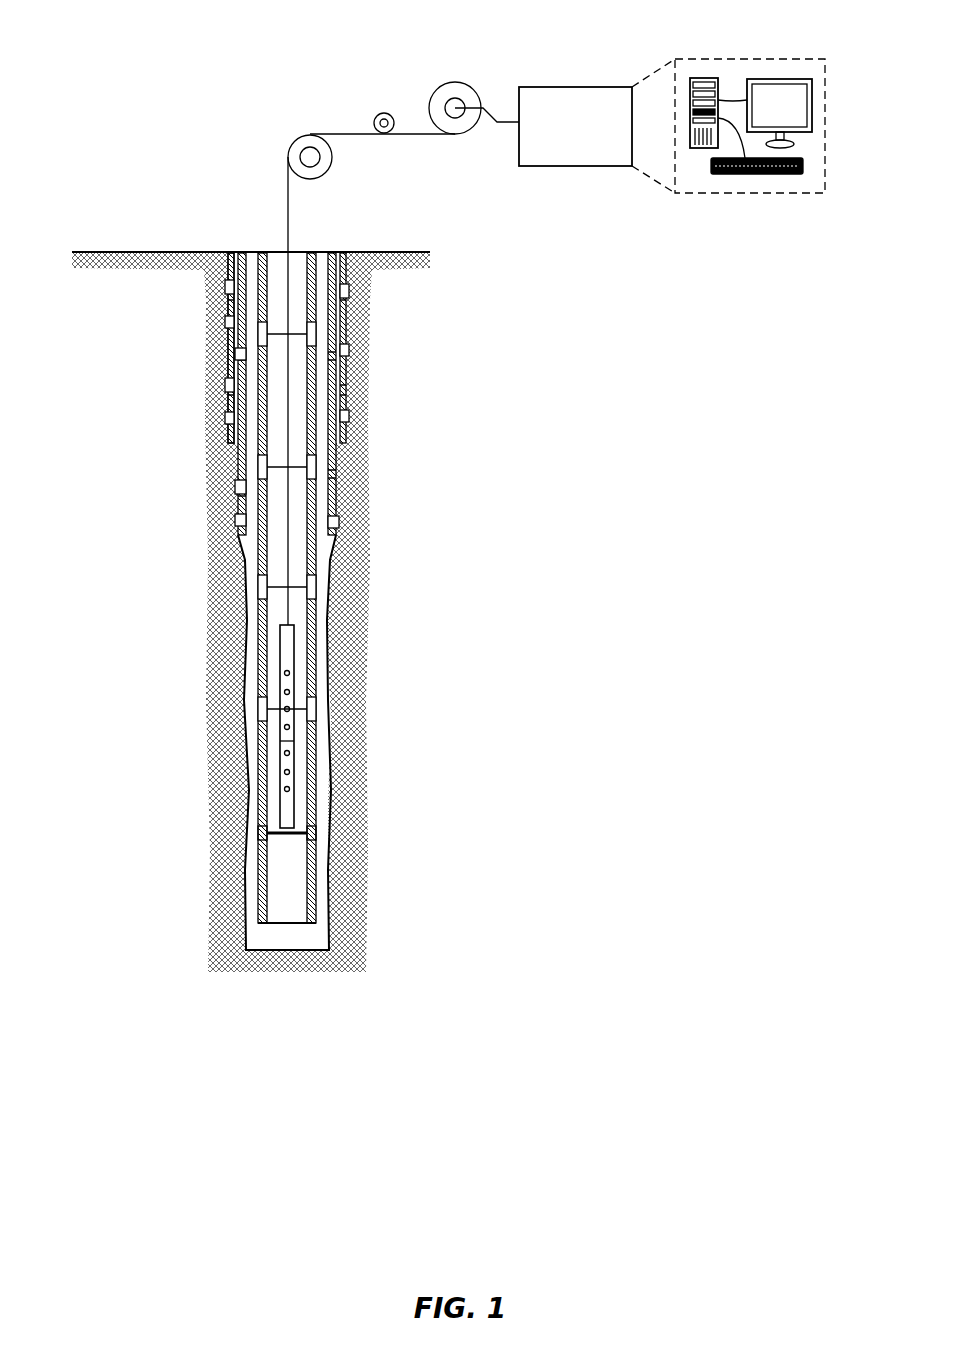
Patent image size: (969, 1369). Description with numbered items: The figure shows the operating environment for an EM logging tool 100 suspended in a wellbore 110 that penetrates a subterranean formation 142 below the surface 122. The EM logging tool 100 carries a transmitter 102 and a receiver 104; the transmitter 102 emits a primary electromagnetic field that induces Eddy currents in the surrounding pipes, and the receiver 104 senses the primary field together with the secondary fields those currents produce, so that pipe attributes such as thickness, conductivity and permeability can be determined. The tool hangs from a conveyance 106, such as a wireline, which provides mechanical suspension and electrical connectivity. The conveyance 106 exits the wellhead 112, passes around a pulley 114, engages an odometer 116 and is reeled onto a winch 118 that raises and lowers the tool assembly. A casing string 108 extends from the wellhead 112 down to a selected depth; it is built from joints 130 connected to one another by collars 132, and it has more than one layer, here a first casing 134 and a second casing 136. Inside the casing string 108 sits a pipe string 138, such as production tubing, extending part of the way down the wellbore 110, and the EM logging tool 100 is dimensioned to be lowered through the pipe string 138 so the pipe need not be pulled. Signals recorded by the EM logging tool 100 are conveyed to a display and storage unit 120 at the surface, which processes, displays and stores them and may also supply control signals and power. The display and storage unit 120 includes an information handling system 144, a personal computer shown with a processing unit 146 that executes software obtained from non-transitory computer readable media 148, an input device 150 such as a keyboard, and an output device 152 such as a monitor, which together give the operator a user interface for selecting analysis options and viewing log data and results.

The EM logging tool 100 is at (284, 726).
The transmitter 102 is at (292, 673).
The receiver 104 is at (292, 692).
The conveyance 106 is at (289, 220).
The casing string 108 is at (222, 448).
The wellbore 110 is at (330, 540).
The wellhead 112 is at (277, 250).
The pulley 114 is at (290, 147).
The odometer 116 is at (386, 113).
The winch 118 is at (467, 84).
The display and storage unit 120 is at (572, 87).
The surface 122 is at (106, 251).
The joint 130 is at (228, 265).
The collar 132 is at (229, 300).
The first casing 134 is at (338, 470).
The second casing 136 is at (345, 432).
The pipe string 138 is at (316, 892).
The subterranean formation 142 is at (654, 265).
The information handling system 144 is at (738, 59).
The processing unit 146 is at (700, 156).
The non-transitory computer readable media 148 is at (697, 78).
The input device 150 is at (757, 175).
The output device 152 is at (778, 79).